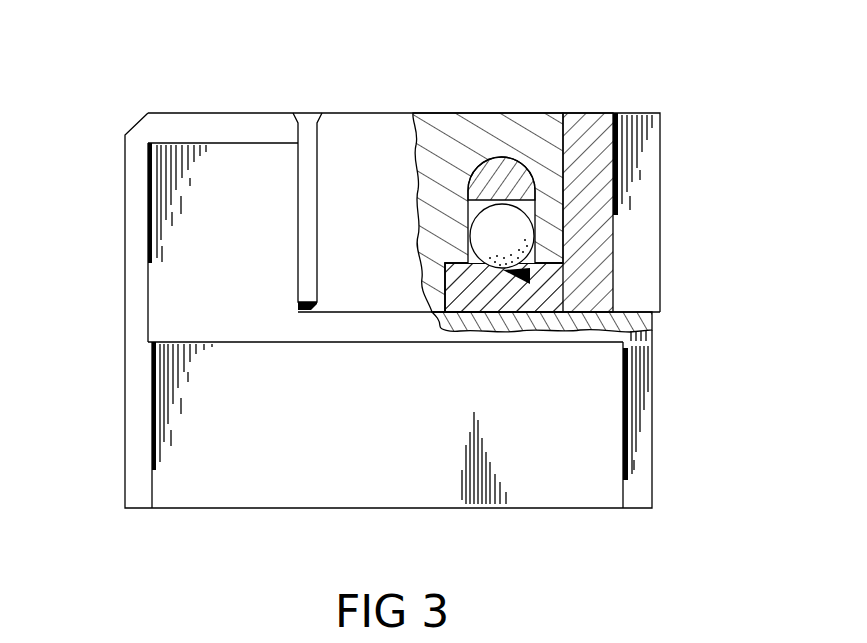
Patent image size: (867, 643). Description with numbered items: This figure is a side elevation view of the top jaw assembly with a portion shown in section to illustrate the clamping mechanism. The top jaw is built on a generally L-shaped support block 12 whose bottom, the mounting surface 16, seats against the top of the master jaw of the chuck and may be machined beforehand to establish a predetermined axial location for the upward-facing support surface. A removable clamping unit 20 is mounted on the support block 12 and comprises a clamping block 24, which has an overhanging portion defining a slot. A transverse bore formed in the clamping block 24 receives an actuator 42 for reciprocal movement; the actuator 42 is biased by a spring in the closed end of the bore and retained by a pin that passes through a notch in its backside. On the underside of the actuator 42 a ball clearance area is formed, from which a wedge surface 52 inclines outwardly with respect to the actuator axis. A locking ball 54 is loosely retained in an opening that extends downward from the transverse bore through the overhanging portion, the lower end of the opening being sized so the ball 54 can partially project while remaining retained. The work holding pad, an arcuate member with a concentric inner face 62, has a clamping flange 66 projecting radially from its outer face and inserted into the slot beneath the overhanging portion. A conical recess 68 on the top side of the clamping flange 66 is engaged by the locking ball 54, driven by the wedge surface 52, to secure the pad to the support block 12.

The support block 12 is at (213, 273).
The mounting surface 16 is at (198, 510).
The clamping unit 20 is at (405, 303).
The clamping block 24 is at (440, 150).
The actuator 42 is at (498, 172).
The wedge surface 52 is at (540, 214).
The locking ball 54 is at (503, 239).
The inner face 62 is at (650, 152).
The clamping flange 66 is at (553, 297).
The conical recess 68 is at (518, 287).